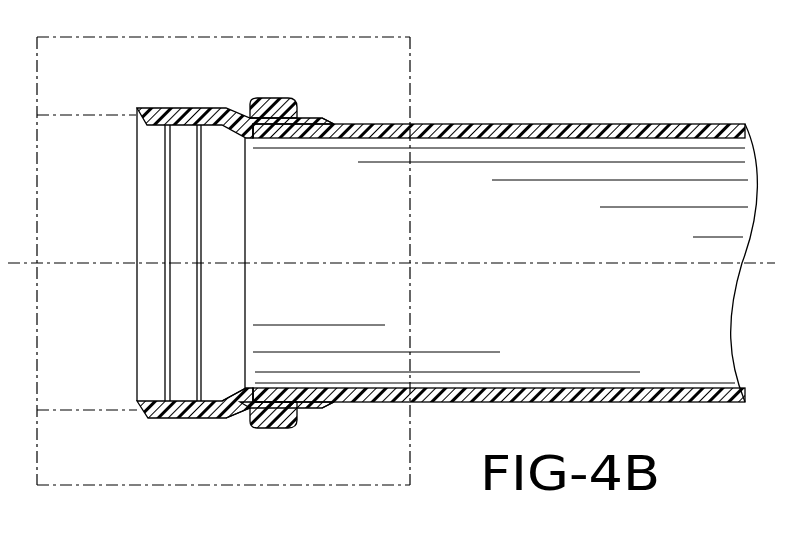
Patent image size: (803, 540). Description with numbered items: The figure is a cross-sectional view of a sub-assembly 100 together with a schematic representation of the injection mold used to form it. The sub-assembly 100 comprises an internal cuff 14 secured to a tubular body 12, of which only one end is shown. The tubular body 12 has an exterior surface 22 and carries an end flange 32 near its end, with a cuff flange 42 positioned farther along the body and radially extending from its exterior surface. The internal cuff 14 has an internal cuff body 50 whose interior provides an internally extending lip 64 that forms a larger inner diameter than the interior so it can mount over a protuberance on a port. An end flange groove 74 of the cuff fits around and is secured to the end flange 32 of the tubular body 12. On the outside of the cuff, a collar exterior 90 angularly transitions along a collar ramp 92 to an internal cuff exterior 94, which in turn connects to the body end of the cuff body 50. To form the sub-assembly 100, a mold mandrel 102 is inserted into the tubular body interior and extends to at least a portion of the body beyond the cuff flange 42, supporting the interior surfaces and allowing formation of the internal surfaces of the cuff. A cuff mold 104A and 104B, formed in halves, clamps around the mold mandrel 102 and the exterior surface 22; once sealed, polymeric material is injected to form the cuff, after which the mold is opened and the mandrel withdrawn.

The sub-assembly 100 is at (512, 52).
The tubular body 12 is at (505, 230).
The internal cuff 14 is at (212, 80).
The exterior surface 22 is at (440, 123).
The end flange 32 is at (268, 105).
The cuff flange 42 is at (331, 111).
The internal cuff body 50 is at (251, 262).
The lip 64 is at (227, 390).
The end flange groove 74 is at (263, 125).
The collar exterior 90 is at (268, 428).
The collar ramp 92 is at (242, 419).
The internal cuff exterior 94 is at (195, 419).
The mold mandrel 102 is at (87, 114).
The cuff mold 104A is at (207, 38).
The cuff mold 104B is at (207, 486).